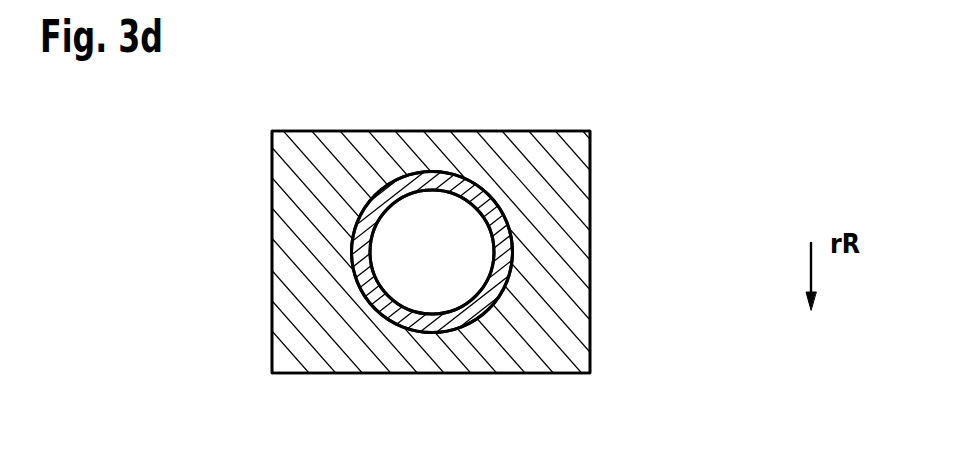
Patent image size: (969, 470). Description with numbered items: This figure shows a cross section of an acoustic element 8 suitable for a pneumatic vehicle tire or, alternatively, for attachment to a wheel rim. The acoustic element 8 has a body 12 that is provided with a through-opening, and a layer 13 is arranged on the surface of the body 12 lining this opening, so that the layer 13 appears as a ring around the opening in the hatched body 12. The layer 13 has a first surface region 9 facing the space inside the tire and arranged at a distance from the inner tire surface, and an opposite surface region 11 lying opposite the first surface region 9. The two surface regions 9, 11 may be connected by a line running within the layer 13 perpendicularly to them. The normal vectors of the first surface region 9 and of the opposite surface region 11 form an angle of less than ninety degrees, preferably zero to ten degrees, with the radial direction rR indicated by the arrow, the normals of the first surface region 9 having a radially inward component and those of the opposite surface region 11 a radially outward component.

The acoustic element 8 is at (210, 233).
The first surface region 9 is at (392, 243).
The opposite surface region 11 is at (338, 302).
The body 12 is at (547, 195).
The layer 13 is at (500, 265).